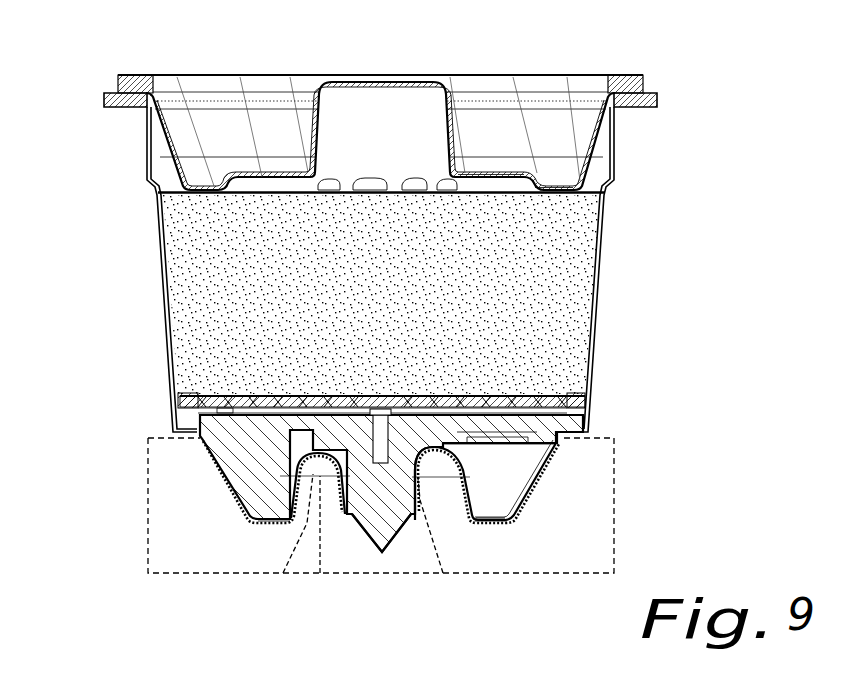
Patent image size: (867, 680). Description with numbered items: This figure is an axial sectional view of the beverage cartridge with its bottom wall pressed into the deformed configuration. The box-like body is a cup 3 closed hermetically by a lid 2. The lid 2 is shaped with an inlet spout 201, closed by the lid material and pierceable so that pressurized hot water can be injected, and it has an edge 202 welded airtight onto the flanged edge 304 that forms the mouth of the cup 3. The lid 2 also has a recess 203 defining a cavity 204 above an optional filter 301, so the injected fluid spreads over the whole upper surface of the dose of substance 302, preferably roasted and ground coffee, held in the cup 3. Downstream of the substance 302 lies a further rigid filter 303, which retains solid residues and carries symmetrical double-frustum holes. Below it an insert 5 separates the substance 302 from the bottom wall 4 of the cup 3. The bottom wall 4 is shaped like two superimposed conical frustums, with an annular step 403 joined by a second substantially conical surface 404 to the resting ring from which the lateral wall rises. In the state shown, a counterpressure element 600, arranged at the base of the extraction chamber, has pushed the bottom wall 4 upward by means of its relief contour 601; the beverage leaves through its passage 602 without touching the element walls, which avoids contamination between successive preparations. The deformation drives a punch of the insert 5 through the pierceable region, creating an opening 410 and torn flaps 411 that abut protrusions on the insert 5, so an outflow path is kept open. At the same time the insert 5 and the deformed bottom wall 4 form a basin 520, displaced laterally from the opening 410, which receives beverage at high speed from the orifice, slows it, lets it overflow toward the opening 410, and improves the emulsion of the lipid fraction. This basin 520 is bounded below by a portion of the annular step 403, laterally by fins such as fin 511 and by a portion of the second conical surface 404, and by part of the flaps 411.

The lid 2 is at (279, 126).
The inlet spout 201 is at (396, 84).
The edge 202 is at (630, 84).
The recess 203 is at (486, 176).
The cavity 204 is at (508, 186).
The cup 3 is at (165, 305).
The filter 301 is at (262, 192).
The substance 302 is at (537, 304).
The filter 303 is at (580, 402).
The flanged edge 304 is at (222, 398).
The bottom wall 4 is at (222, 500).
The annular step 403 is at (490, 523).
The second substantially conical surface 404 is at (217, 479).
The opening 410 is at (350, 488).
The torn flaps 411 is at (445, 461).
The insert 5 is at (569, 424).
The fin 511 is at (500, 464).
The basin 520 is at (487, 507).
The counterpressure element 600 is at (147, 533).
The relief contour 601 is at (345, 547).
The passage 602 is at (385, 565).